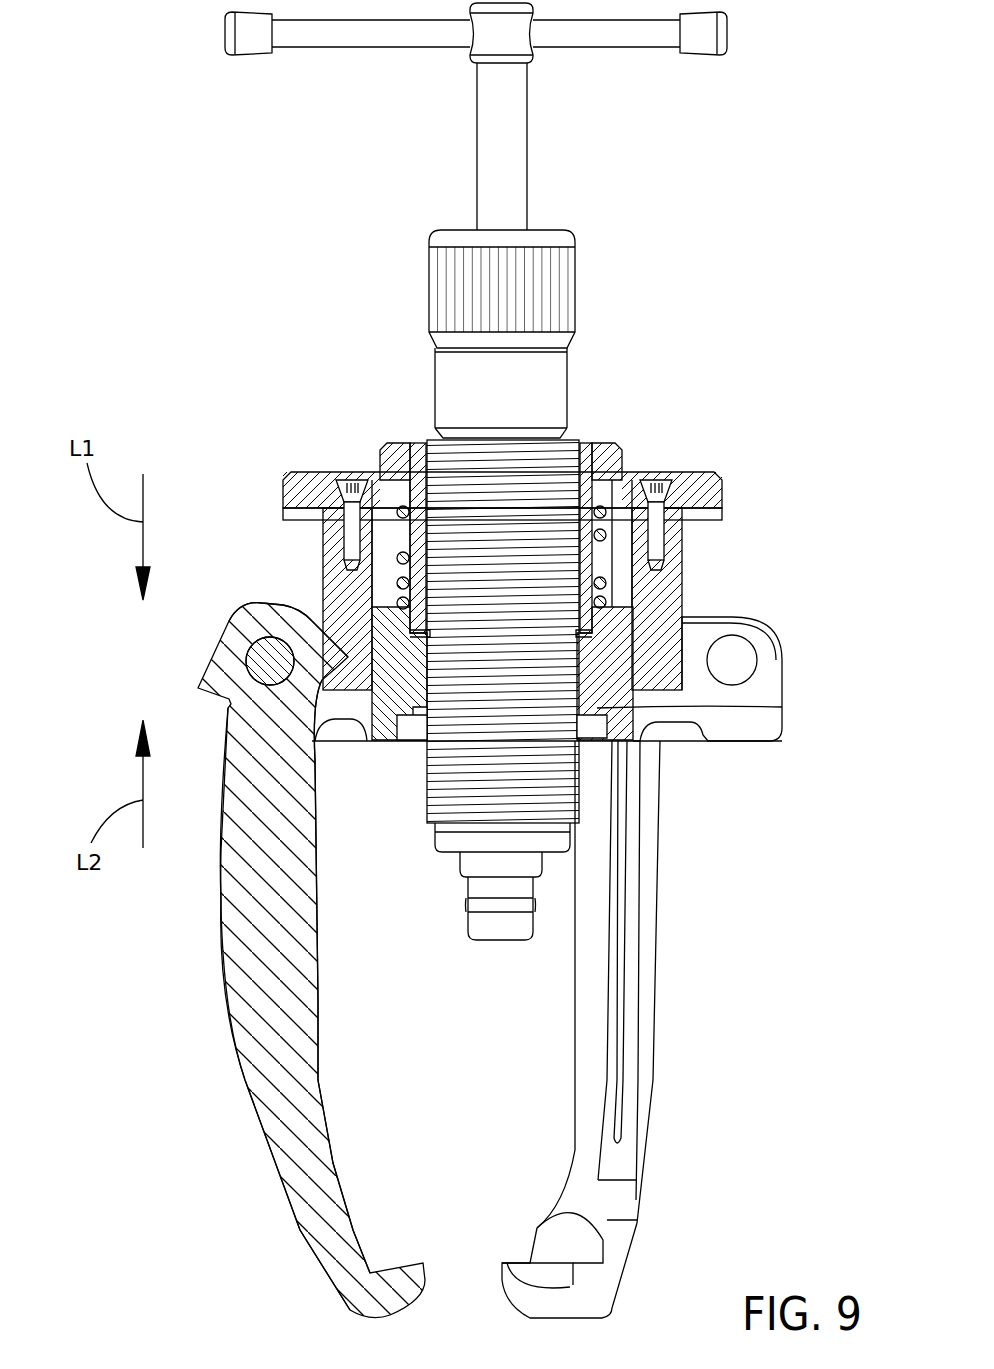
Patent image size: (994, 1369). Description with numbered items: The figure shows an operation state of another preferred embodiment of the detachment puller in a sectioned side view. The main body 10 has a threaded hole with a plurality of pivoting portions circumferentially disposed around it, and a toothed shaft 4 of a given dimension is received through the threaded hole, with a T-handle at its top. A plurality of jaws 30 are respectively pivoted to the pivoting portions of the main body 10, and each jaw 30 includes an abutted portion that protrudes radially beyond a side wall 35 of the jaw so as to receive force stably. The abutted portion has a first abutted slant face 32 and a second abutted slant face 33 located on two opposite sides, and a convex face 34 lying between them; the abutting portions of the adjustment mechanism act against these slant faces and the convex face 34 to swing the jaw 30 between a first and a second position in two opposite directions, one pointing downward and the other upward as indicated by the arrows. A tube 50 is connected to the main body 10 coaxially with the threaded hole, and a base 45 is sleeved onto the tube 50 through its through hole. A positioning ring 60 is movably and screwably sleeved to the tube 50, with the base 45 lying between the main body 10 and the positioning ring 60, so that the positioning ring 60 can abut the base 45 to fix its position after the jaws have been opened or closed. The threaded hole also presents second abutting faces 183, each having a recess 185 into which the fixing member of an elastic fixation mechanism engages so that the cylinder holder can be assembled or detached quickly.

The toothed shaft 4 is at (440, 281).
The main body 10 is at (786, 634).
The jaw 30 is at (292, 924).
The first abutted slant face 32 is at (319, 621).
The second abutted slant face 33 is at (341, 680).
The convex face 34 is at (362, 665).
The side wall 35 is at (233, 955).
The base 45 is at (702, 490).
The tube 50 is at (591, 445).
The positioning ring 60 is at (620, 446).
The second abutting face 183 is at (598, 742).
The recess 185 is at (607, 722).